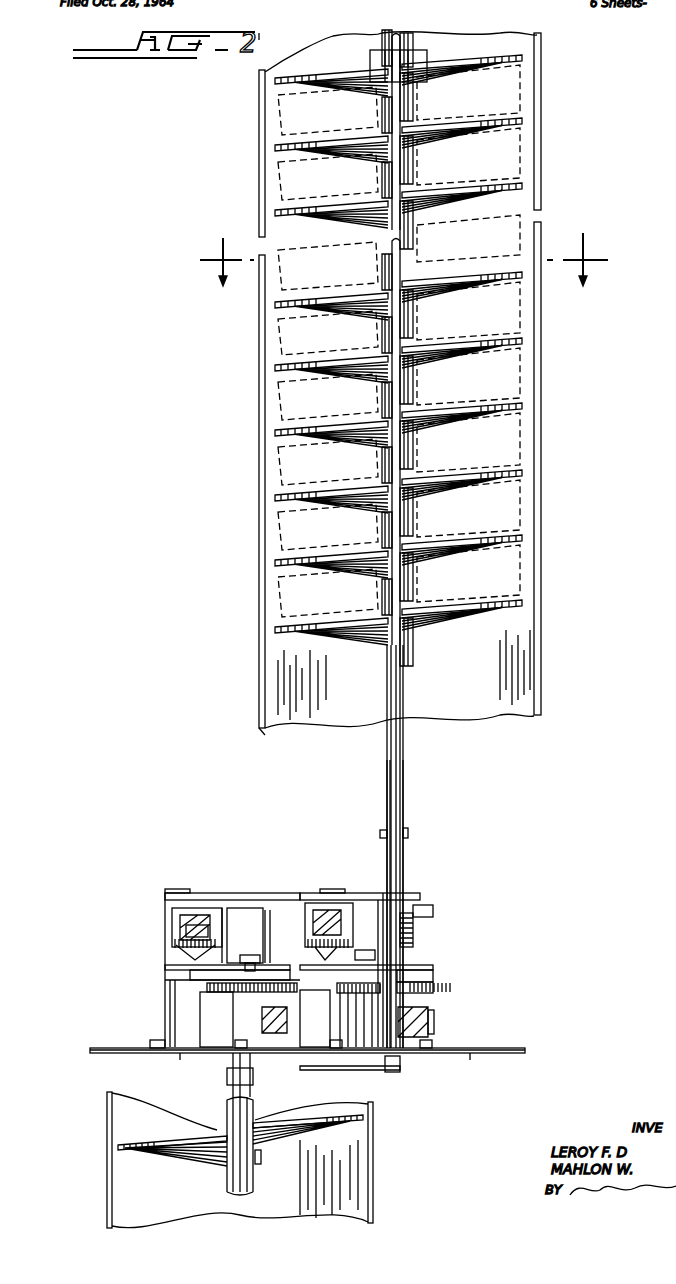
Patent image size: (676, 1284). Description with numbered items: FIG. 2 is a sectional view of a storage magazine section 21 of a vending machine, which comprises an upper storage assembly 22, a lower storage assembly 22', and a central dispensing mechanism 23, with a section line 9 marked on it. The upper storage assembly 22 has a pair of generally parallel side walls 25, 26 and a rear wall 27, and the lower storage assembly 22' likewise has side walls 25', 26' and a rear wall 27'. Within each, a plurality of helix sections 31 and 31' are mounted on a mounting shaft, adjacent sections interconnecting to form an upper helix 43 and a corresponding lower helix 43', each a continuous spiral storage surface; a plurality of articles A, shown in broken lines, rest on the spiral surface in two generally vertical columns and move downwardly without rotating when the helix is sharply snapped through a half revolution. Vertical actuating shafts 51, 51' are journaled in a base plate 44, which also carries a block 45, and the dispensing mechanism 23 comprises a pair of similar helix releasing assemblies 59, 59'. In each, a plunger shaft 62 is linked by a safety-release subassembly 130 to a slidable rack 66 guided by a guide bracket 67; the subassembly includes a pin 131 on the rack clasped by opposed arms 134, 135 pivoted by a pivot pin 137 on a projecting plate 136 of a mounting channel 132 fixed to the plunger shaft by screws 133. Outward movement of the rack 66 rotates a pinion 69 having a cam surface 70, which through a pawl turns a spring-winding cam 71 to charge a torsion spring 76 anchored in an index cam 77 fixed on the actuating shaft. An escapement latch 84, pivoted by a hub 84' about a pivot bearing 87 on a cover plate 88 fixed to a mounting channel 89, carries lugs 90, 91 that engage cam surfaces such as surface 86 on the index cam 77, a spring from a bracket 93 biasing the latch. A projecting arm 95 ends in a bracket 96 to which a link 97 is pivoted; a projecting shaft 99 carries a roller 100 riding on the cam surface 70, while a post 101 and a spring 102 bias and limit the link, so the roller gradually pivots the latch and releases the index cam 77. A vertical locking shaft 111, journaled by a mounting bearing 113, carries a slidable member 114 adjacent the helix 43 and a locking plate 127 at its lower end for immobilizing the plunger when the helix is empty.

The section line of FIG. 9 is at (404, 259).
The storage magazine section 21 is at (603, 800).
The upper storage assembly 22 is at (445, 166).
The lower storage assembly 22' is at (47, 1157).
The central dispensing mechanism 23 is at (120, 948).
The side wall 25 is at (235, 402).
The side wall 25' is at (80, 1160).
The side wall 26 is at (558, 374).
The side wall 26' is at (391, 1162).
The rear wall 27 is at (543, 667).
The rear wall 27' is at (384, 1175).
The helix section 31 is at (429, 327).
The helix section 31' is at (240, 1149).
The helix 43 is at (278, 685).
The lower helix 43' is at (364, 1181).
The base plate 44 is at (125, 1048).
The support block 45 is at (155, 1048).
The vertical actuating shaft 51 is at (419, 904).
The vertical actuating shaft 51' is at (226, 1075).
The helix releasing assembly 59 is at (479, 932).
The helix releasing assembly 59' is at (114, 973).
The plunger shaft 62 is at (428, 1020).
The slidable rack 66 is at (200, 992).
The guide bracket 67 is at (262, 905).
The pinion 69 is at (433, 990).
The cam surface 70 is at (433, 982).
The spring-winding cam 71 is at (433, 975).
The torsion spring 76 is at (413, 930).
The index cam 77 is at (268, 925).
The escapement latch 84 is at (275, 898).
The hub 84' is at (254, 856).
The cam surface 86 is at (272, 893).
The pivot bearing 87 is at (195, 915).
The cover plate 88 is at (178, 893).
The mounting channel 89 is at (205, 965).
The lug 90 is at (180, 943).
The lug 91 is at (232, 905).
The bracket 93 is at (326, 939).
The projecting arm 95 is at (242, 908).
The bracket 96 is at (255, 963).
The link 97 is at (182, 1053).
The projecting shaft 99 is at (355, 955).
The roller 100 is at (365, 940).
The post 101 is at (186, 930).
The spring 102 is at (178, 948).
The vertical locking shaft 111 is at (403, 698).
The mounting bearing 113 is at (395, 1070).
The slidable member 114 is at (370, 56).
The locking plate 127 is at (385, 1060).
The safety-release subassembly 130 is at (165, 1053).
The horizontally projecting pin 131 is at (195, 1053).
The mounting channel 132 is at (434, 1030).
The screws 133 is at (433, 995).
The opposed arm 134 is at (200, 1053).
The opposed arm 135 is at (348, 1053).
The projecting plate 136 is at (275, 1085).
The pivot pin 137 is at (440, 1086).
The articles A is at (500, 100).